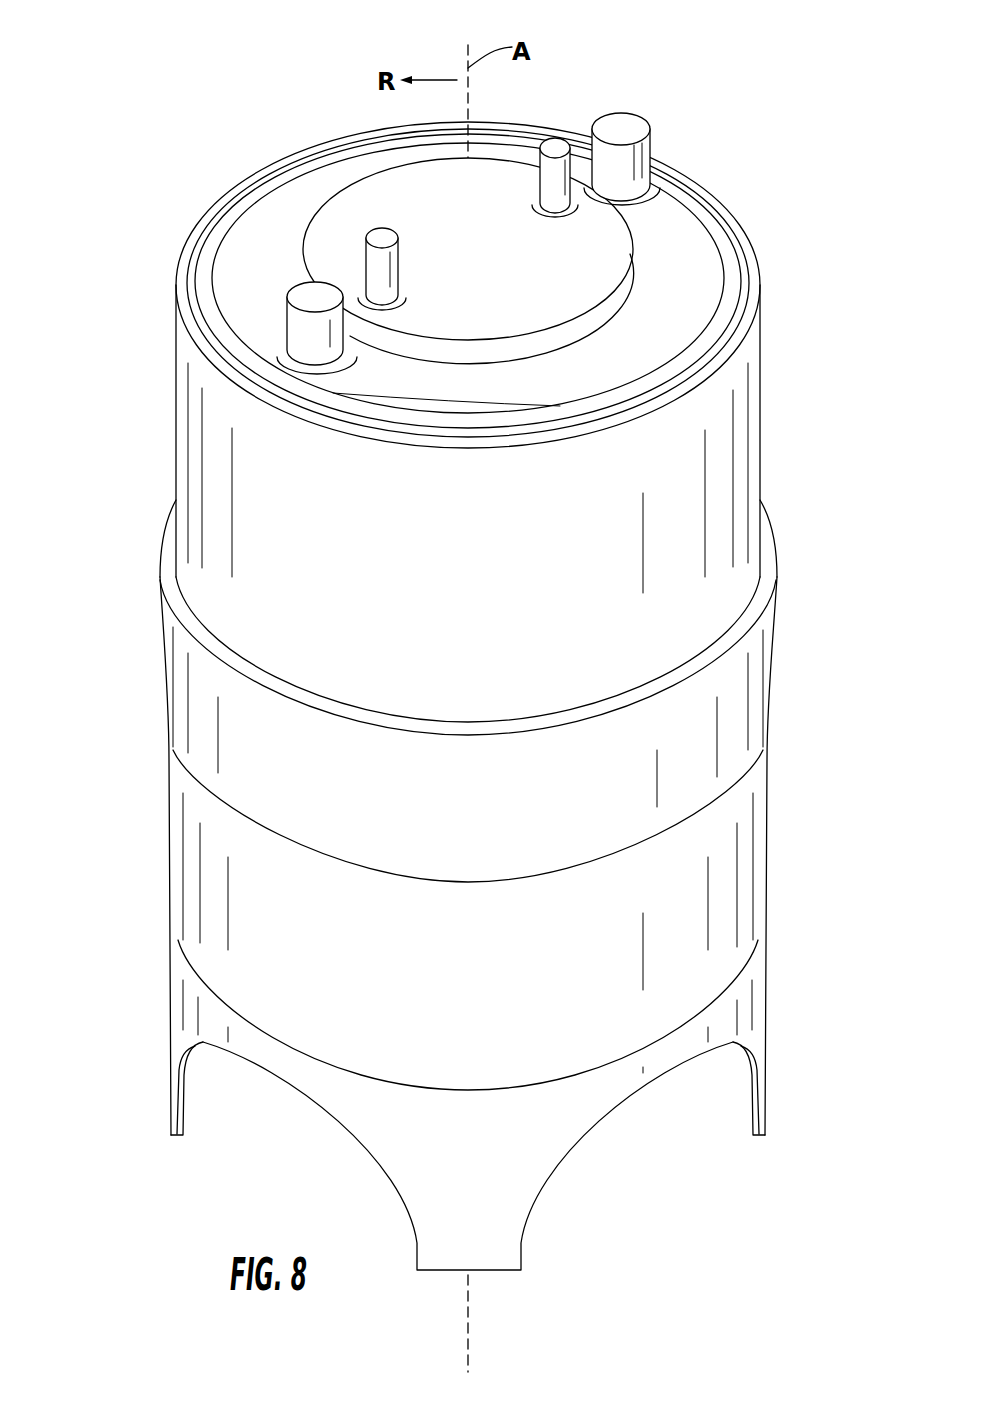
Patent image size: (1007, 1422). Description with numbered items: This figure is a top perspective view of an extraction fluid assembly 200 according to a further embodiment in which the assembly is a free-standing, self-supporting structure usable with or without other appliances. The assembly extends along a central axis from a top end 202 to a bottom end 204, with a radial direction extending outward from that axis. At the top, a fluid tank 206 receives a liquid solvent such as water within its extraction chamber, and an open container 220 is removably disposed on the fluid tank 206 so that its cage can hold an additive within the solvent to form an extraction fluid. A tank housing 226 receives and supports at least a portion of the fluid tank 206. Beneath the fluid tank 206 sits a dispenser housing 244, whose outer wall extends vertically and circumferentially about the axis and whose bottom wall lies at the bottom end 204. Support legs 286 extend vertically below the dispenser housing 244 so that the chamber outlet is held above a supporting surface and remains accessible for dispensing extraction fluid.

The extraction fluid assembly 200 is at (90, 78).
The top end 202 is at (163, 260).
The bottom end 204 is at (163, 1150).
The fluid tank 206 is at (690, 265).
The open container 220 is at (603, 242).
The tank housing 226 is at (743, 392).
The dispenser housing 244 is at (762, 690).
The support legs 286 is at (172, 1092).